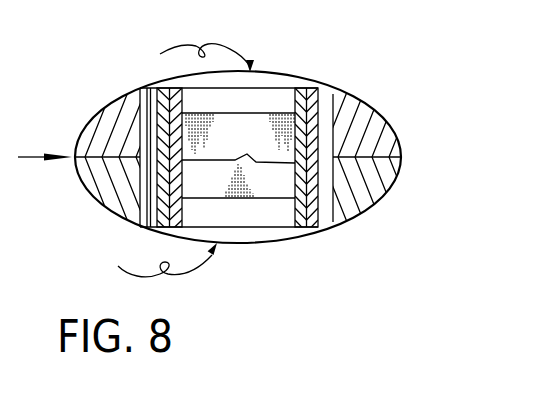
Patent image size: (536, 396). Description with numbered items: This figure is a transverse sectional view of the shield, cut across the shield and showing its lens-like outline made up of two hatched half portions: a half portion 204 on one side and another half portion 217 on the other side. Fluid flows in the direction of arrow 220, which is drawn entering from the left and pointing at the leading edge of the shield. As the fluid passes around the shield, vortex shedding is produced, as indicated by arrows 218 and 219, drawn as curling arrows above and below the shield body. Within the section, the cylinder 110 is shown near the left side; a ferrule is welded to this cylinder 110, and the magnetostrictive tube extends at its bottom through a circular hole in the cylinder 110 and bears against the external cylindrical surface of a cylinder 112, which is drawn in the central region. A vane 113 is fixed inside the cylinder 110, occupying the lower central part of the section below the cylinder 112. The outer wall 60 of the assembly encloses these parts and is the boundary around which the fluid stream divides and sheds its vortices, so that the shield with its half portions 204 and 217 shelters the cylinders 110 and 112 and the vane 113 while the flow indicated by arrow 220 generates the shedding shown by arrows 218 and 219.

The housing 60 is at (367, 97).
The cylinder 110 is at (157, 190).
The cylinder 112 is at (238, 138).
The vane 113 is at (262, 198).
The half portion 204 is at (391, 144).
The half portion 217 is at (384, 195).
The arrow 218 is at (201, 46).
The arrow 219 is at (142, 268).
The arrow 220 is at (38, 156).